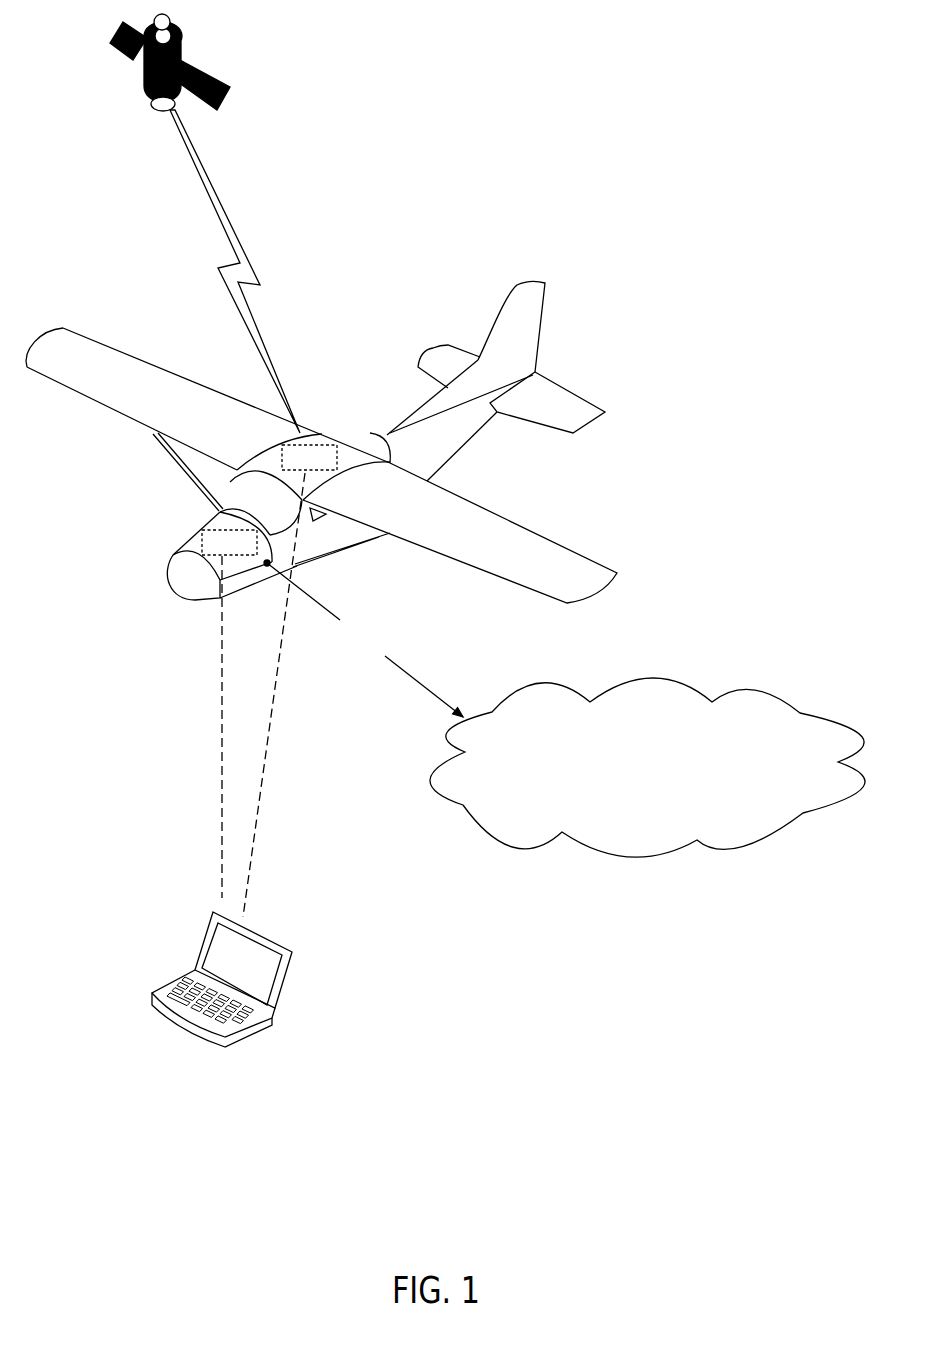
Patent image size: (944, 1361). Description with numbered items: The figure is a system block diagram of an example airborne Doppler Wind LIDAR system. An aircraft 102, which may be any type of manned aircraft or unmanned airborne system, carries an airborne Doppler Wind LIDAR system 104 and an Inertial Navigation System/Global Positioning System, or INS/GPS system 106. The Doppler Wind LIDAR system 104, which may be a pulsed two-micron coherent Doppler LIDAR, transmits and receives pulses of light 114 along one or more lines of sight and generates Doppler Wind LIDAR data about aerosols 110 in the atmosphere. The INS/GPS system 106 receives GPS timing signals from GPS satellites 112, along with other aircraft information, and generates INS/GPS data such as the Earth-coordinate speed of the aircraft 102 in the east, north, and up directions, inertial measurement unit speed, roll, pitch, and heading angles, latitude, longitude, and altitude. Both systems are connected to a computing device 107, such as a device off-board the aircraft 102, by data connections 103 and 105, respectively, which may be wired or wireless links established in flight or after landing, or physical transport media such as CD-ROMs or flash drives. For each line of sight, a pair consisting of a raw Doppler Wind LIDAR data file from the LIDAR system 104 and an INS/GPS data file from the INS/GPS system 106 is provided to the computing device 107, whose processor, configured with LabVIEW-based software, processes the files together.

The aircraft 102 is at (513, 520).
The data connection 103 is at (222, 713).
The airborne Doppler Wind LIDAR system 104 is at (211, 553).
The data connection 105 is at (268, 740).
The Inertial Navigation System/Global Positioning System (INS/GPS) system 106 is at (291, 468).
The computing device 107 is at (277, 1007).
The aerosols 110 is at (647, 767).
The GPS satellites 112 is at (203, 63).
The pulses of light 114 is at (363, 638).